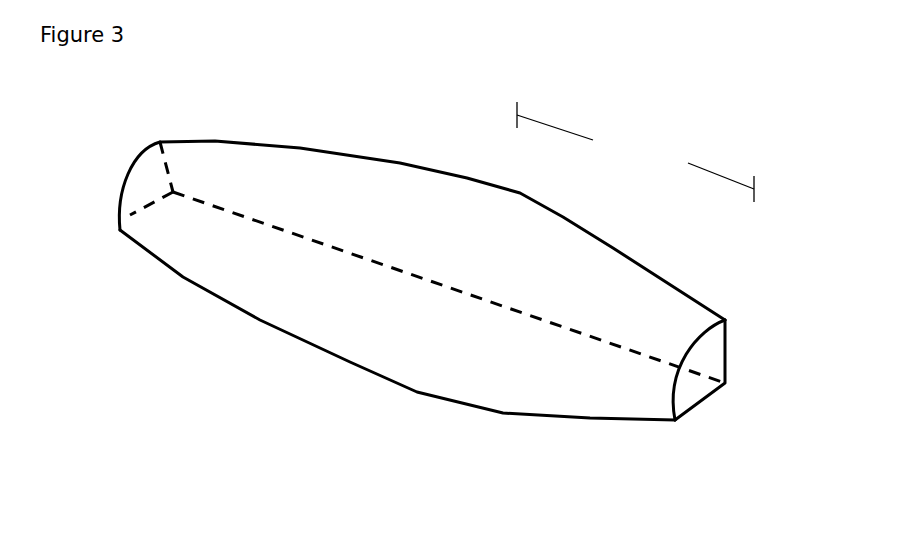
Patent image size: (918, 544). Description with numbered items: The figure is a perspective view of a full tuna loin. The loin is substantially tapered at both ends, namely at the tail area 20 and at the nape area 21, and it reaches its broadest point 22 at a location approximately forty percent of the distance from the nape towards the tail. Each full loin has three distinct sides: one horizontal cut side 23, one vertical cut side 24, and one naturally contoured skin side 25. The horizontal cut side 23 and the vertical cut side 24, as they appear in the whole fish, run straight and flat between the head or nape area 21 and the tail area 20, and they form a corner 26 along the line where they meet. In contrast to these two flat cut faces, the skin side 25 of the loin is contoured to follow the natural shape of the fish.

The tail area 20 is at (213, 140).
The nape area 21 is at (690, 292).
The broadest point 22 is at (503, 178).
The horizontal cut side 23 is at (278, 292).
The vertical cut side 24 is at (400, 192).
The skin side 25 is at (438, 323).
The corner 26 is at (540, 325).